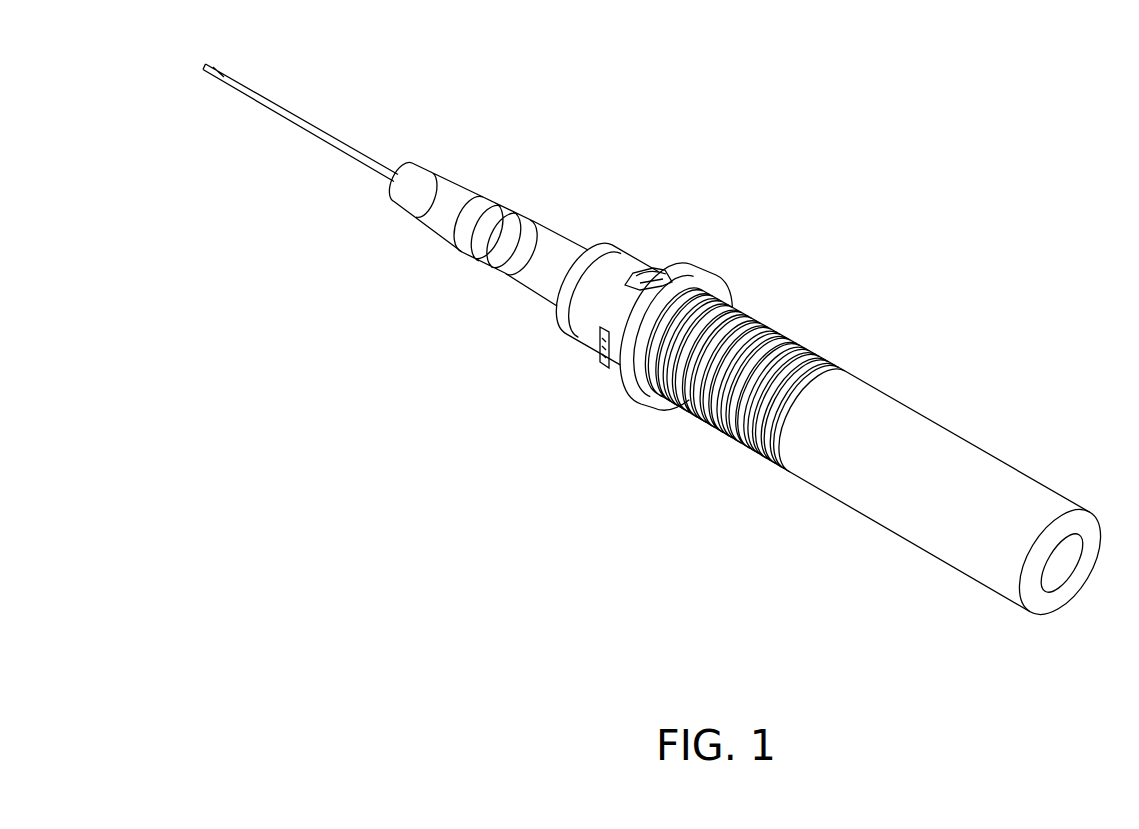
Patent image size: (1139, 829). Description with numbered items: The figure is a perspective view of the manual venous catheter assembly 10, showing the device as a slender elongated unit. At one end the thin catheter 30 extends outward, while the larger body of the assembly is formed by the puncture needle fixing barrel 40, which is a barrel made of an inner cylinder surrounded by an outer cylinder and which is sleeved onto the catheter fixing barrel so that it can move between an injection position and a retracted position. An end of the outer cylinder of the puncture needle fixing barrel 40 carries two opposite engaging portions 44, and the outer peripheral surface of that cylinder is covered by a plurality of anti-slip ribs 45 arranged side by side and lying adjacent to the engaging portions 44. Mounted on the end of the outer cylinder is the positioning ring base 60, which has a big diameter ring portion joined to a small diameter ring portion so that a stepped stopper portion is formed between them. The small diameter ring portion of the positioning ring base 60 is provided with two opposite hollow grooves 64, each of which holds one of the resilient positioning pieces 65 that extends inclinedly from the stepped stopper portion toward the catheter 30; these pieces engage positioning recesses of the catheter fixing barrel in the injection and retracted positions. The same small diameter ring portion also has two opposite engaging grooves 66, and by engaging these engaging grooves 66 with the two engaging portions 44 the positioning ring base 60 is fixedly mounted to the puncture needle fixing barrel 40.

The manual venous catheter assembly 10 is at (1000, 155).
The catheter 30 is at (408, 247).
The puncture needle fixing barrel 40 is at (820, 546).
The engaging portions 44 is at (606, 368).
The anti-slip ribs 45 is at (706, 403).
The positioning ring base 60 is at (553, 355).
The hollow grooves 64 is at (640, 270).
The resilient positioning pieces 65 is at (657, 270).
The engaging grooves 66 is at (600, 327).